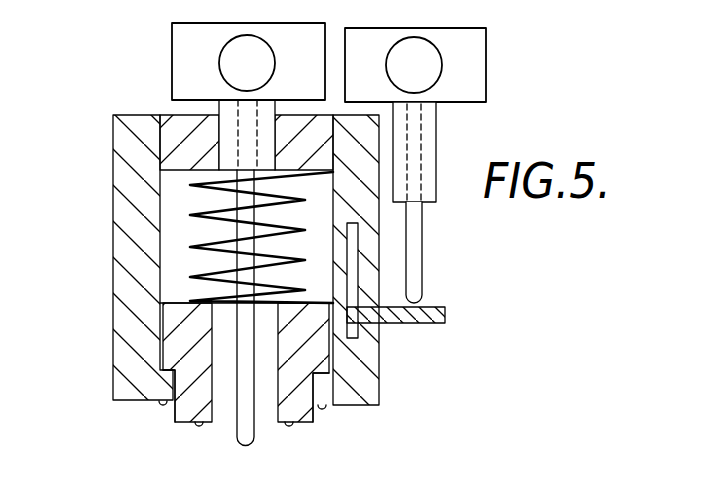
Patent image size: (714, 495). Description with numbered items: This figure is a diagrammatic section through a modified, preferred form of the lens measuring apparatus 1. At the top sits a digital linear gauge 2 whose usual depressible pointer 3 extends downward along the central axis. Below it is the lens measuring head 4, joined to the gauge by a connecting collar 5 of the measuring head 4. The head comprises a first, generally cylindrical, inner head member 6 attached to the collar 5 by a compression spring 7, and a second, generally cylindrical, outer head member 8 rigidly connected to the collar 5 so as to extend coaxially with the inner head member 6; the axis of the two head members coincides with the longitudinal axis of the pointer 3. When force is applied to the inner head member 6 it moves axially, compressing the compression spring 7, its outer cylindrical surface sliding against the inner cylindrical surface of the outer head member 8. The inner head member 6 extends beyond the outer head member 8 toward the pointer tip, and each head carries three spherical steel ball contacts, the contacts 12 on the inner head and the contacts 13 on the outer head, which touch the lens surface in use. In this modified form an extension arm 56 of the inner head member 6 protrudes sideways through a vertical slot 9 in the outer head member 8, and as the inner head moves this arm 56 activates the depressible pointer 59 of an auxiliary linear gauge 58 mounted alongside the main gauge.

The lens measuring apparatus 1 is at (106, 156).
The digital linear gauge 2 is at (172, 33).
The depressible pointer 3 is at (255, 423).
The lens measuring head 4 is at (398, 342).
The connecting collar 5 is at (182, 115).
The first head member 6 is at (178, 410).
The compression spring 7 is at (197, 213).
The second head member 8 is at (112, 283).
The vertical slot 9 is at (378, 372).
The contacts 12 is at (197, 428).
The contacts 13 is at (159, 405).
The extension arm 56 is at (447, 313).
The auxiliary linear gauge 58 is at (470, 50).
The depressible pointer 59 is at (423, 275).